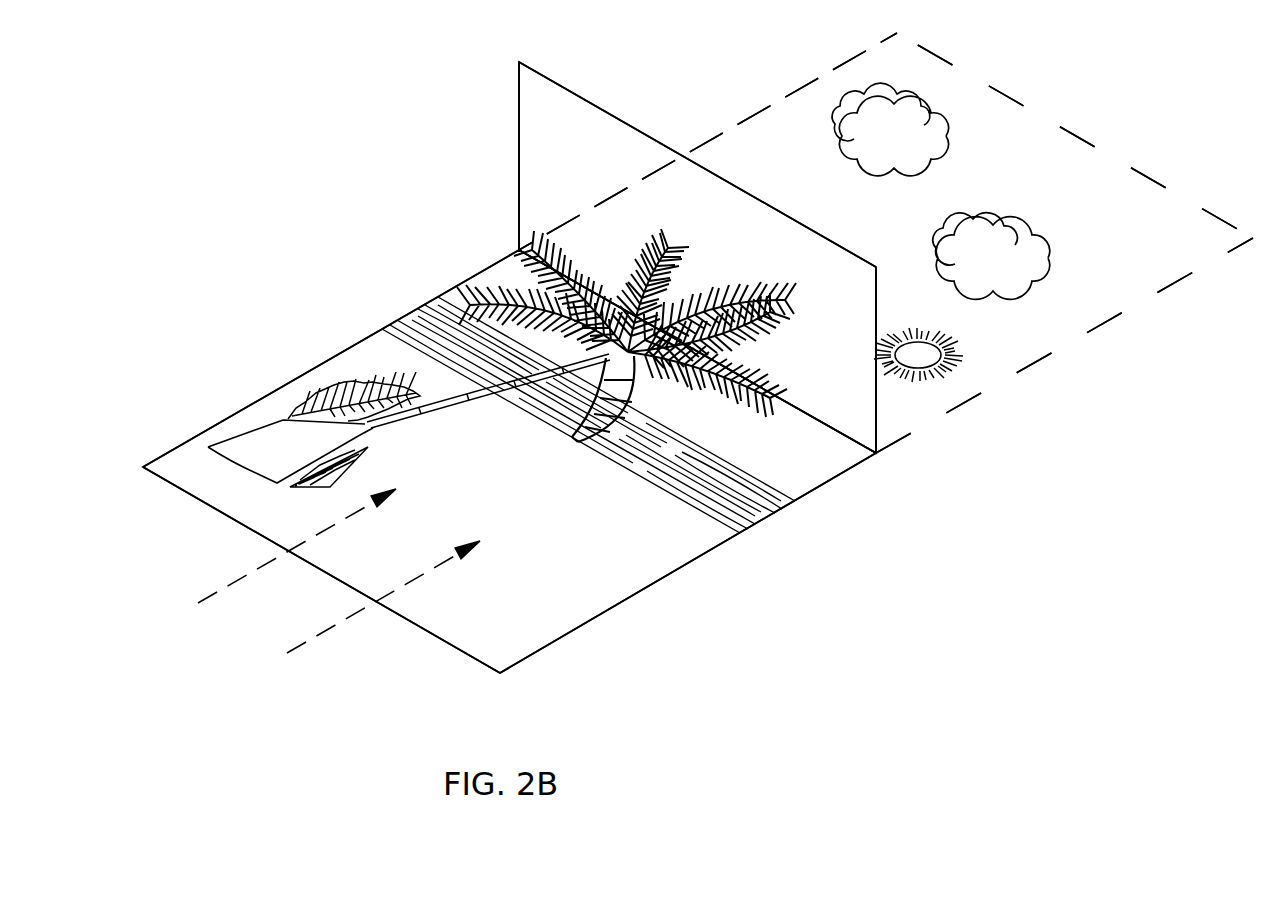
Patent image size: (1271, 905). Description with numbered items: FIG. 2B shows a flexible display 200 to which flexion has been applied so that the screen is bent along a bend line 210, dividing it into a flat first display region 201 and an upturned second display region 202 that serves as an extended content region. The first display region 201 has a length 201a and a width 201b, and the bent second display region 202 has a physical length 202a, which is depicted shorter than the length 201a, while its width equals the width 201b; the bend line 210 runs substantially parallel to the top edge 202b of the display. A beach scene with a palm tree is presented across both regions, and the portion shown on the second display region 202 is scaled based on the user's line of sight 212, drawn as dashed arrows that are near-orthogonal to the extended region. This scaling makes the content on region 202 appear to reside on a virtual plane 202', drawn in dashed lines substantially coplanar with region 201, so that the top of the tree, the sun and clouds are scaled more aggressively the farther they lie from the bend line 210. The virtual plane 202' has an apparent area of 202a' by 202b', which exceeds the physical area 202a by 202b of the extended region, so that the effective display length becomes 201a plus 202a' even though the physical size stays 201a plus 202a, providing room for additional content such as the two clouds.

The flexible display 200 is at (340, 137).
The first display region 201 is at (690, 548).
The length of first display region 201a is at (300, 376).
The width of first display region 201b is at (438, 640).
The second display region 202 is at (664, 257).
The length of second display region 202a is at (733, 261).
The top edge of the display 202b is at (697, 156).
The virtual plane 202' is at (886, 237).
The perceived virtual length 202a' is at (886, 241).
The virtual plane width dimension 202b' is at (1075, 135).
The bend line 210 is at (857, 448).
The user's line of sight 212 is at (215, 591).